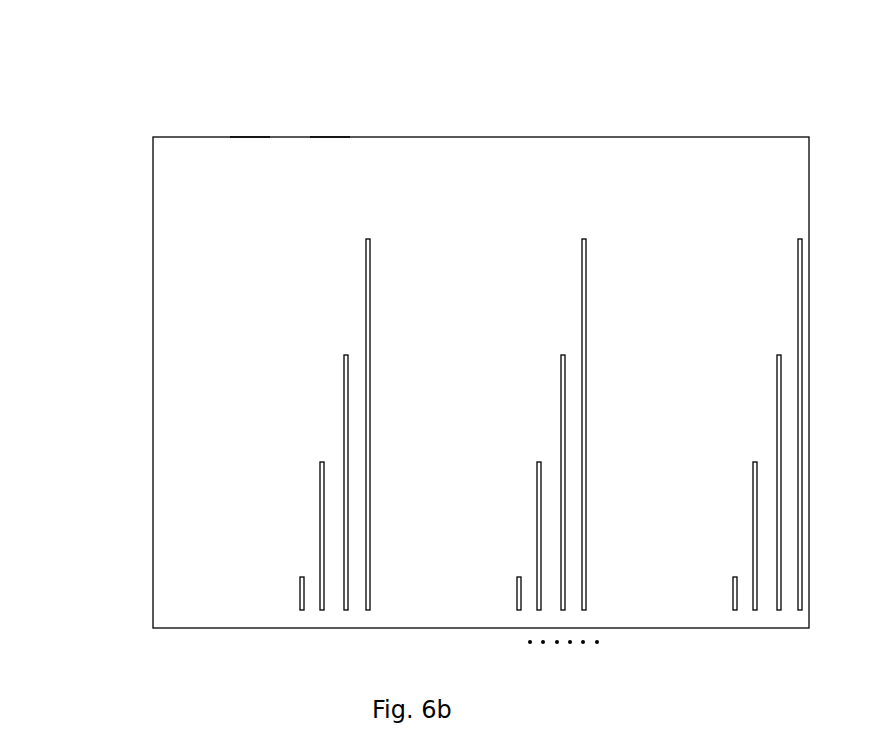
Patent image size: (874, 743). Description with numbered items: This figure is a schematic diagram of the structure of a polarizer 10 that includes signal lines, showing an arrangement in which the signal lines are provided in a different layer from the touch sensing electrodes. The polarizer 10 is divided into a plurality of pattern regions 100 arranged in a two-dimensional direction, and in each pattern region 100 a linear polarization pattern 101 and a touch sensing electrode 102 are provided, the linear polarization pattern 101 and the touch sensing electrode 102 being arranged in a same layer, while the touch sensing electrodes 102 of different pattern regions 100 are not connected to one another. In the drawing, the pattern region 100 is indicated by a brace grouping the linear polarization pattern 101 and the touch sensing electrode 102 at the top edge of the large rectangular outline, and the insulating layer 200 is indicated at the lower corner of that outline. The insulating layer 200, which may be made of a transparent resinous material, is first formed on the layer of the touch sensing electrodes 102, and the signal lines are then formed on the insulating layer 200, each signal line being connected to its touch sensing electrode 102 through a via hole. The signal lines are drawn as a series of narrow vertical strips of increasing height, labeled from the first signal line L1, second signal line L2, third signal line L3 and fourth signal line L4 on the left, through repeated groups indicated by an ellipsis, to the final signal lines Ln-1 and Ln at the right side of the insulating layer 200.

The polarizer 10 is at (59, 80).
The pattern region 100 is at (376, 63).
The linear polarization pattern 101 is at (251, 137).
The touch sensing electrode 102 is at (331, 137).
The insulating layer 200 is at (162, 617).
The signal line L1 is at (300, 611).
The signal line L2 is at (321, 611).
The signal line L3 is at (346, 611).
The signal line L4 is at (369, 611).
The signal line Ln-1 is at (778, 611).
The signal line Ln is at (801, 611).